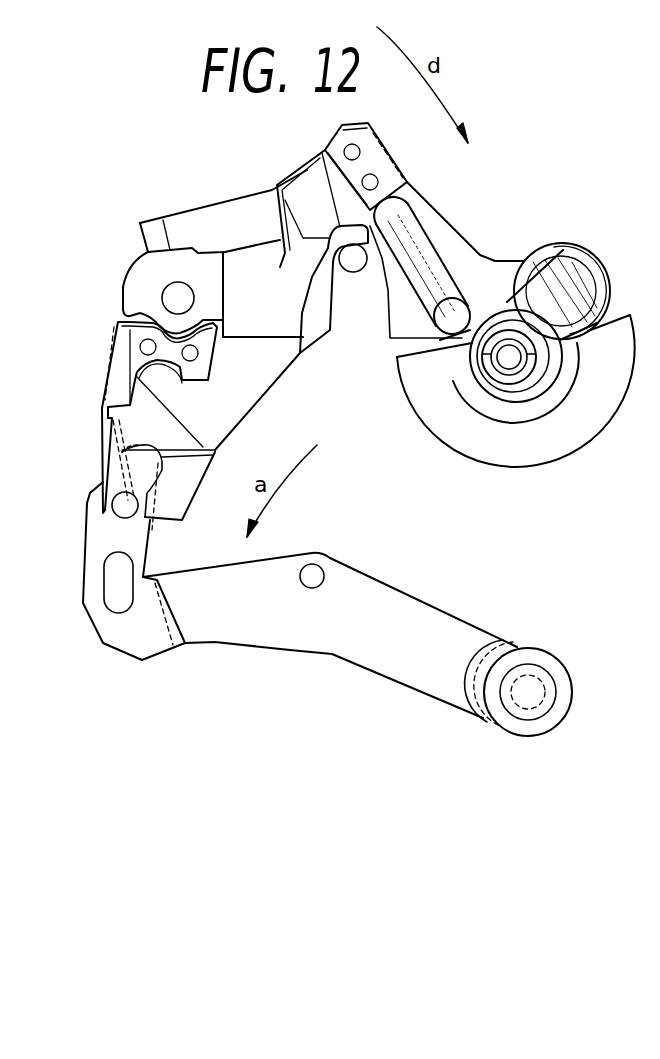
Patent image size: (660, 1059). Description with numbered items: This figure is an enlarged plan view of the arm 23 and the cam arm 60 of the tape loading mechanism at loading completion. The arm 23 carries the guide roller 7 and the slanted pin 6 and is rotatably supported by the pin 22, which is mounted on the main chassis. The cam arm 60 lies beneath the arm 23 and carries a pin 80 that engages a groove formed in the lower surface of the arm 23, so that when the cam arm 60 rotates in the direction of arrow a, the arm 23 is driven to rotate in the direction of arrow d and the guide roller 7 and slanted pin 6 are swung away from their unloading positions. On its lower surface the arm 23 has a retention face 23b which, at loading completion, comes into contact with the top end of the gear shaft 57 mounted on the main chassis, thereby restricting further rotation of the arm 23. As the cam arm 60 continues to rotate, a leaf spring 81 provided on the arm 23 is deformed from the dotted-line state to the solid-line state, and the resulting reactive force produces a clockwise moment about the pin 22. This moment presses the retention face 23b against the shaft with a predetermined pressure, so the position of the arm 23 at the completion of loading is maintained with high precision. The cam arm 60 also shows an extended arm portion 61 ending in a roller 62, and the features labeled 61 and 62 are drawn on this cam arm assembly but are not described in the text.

The slanted pin 6 is at (428, 250).
The guide roller 7 is at (560, 272).
The pin 22 is at (170, 295).
The arm 23 is at (480, 255).
The retention face 23b is at (320, 158).
The gear shaft 57 is at (353, 263).
The cam arm 60 is at (130, 655).
The arm 61 is at (312, 565).
The roller 62 is at (537, 694).
The pin 80 is at (118, 518).
The leaf spring 81 is at (118, 387).